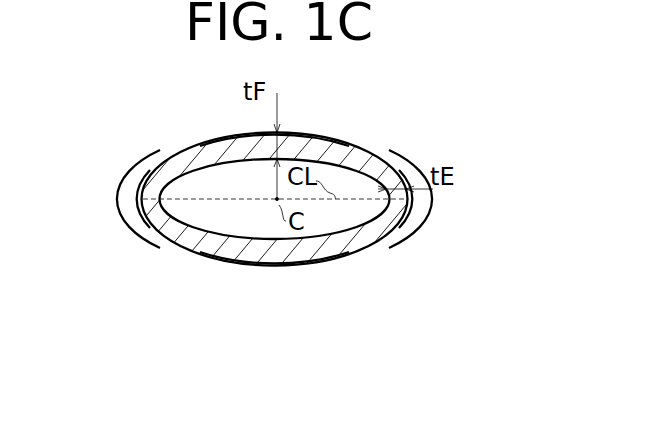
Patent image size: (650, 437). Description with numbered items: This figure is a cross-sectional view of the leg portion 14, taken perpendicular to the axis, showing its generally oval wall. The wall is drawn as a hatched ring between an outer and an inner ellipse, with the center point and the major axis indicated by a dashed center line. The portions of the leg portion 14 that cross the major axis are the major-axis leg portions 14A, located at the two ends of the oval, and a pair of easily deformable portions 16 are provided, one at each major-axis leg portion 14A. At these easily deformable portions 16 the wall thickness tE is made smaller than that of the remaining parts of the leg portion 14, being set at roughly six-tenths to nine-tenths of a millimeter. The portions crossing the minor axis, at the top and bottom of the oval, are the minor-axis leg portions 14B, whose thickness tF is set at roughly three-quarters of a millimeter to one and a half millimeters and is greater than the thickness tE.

The leg portion 14 is at (347, 142).
The major-axis leg portion 14A is at (142, 197).
The minor-axis leg portion 14B is at (288, 132).
The easily deformable portion 16 is at (152, 227).